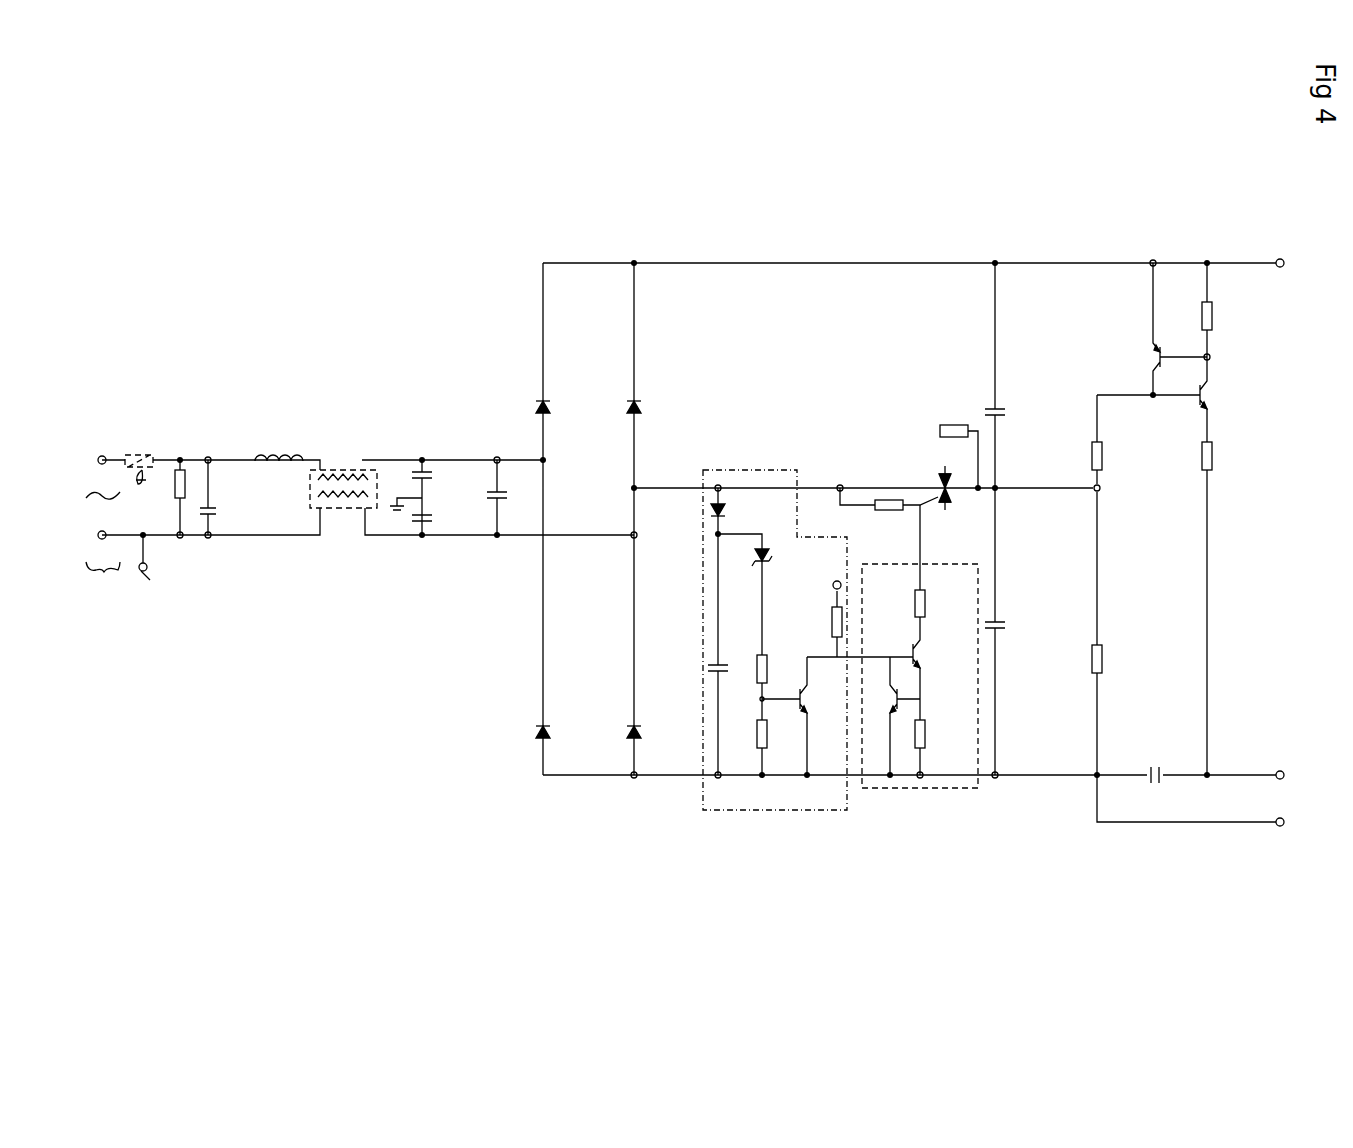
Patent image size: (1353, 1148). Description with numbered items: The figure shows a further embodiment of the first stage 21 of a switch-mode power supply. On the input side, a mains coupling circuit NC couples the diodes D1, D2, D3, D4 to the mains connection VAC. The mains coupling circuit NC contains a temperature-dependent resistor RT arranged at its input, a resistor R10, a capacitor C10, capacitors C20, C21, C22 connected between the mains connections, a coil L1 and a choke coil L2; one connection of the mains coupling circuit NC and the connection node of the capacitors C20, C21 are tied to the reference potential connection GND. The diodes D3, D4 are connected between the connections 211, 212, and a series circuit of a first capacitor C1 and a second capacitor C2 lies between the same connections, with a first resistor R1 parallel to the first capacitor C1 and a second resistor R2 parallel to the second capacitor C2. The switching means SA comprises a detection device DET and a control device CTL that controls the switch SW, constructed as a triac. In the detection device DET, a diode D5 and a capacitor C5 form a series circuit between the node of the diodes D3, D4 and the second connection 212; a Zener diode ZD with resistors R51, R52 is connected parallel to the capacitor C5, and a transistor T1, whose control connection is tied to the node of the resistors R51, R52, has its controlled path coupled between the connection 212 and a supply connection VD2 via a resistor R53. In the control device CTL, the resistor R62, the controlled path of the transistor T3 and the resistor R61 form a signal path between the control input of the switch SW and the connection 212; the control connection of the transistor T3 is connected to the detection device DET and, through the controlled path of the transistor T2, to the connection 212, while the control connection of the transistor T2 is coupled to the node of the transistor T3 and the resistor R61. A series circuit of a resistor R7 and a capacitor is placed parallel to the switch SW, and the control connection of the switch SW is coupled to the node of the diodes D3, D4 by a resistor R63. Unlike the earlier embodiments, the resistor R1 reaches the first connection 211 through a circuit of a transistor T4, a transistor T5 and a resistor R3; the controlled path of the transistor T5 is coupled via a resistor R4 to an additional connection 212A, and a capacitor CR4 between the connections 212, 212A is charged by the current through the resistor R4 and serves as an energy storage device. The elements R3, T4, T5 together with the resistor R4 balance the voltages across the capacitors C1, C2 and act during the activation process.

The first stage 21 is at (382, 268).
The temperature-dependent resistor RT is at (138, 456).
The resistor R10 is at (173, 500).
The capacitor C10 is at (214, 512).
The coil L1 is at (283, 456).
The choke coil L2 is at (345, 468).
The capacitor C20 is at (428, 482).
The capacitor C21 is at (434, 520).
The capacitor C22 is at (501, 504).
The reference potential connection GND is at (280, 549).
The mains connection VAC is at (101, 586).
The mains coupling circuit NC is at (381, 577).
The diode D1 is at (550, 410).
The diode D2 is at (550, 735).
The diode D3 is at (642, 411).
The diode D4 is at (642, 735).
The switching means SA is at (803, 420).
The detection device DET is at (848, 815).
The control device CTL is at (945, 792).
The diode D5 is at (737, 511).
The capacitor C5 is at (712, 666).
The Zener diode ZD is at (762, 594).
The resistor R51 is at (783, 682).
The resistor R52 is at (767, 733).
The resistor R53 is at (845, 628).
The transistor T1 is at (798, 717).
The second transistor T2 is at (890, 717).
The third transistor T3 is at (933, 668).
The supply connection VD2 is at (842, 582).
The resistor R61 is at (926, 735).
The resistor R62 is at (926, 605).
The resistor R63 is at (889, 512).
The switch SW is at (1133, 557).
The resistor R7 is at (953, 424).
The first capacitor C1 is at (1002, 412).
The second capacitor C2 is at (1003, 624).
The first resistor R1 is at (1103, 458).
The second resistor R2 is at (1103, 657).
The resistor R3 is at (1224, 310).
The resistor R4 is at (1224, 610).
The transistor T4 is at (1166, 329).
The transistor T5 is at (1209, 395).
The capacitor CR4 is at (1146, 773).
The first connection 211 is at (1284, 262).
The additional connection 212A is at (1282, 770).
The second connection 212 is at (1280, 826).